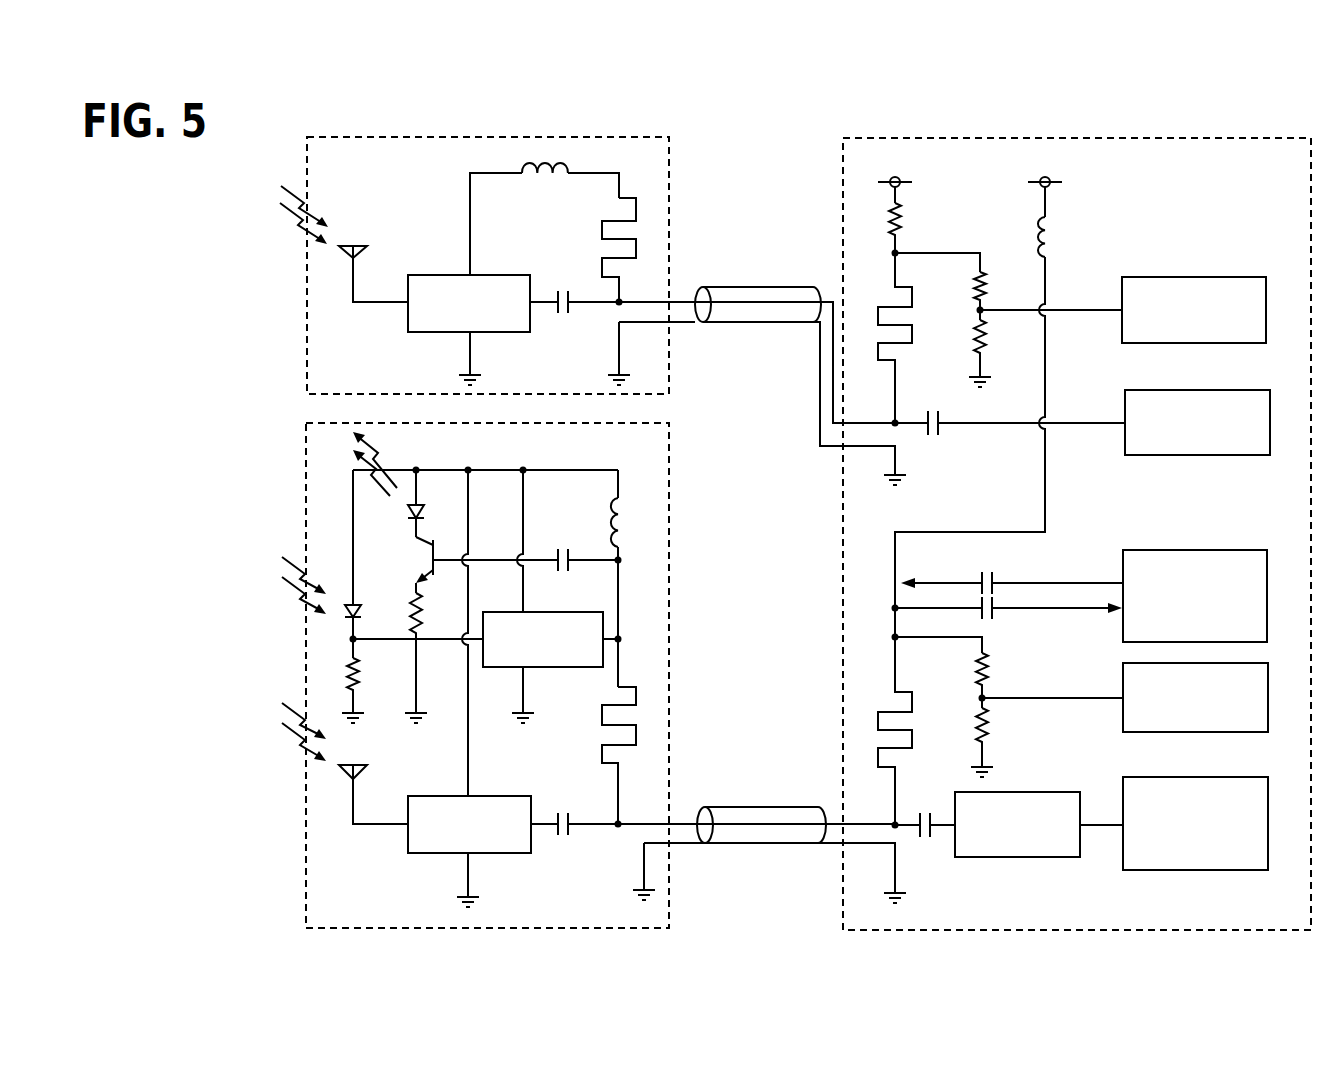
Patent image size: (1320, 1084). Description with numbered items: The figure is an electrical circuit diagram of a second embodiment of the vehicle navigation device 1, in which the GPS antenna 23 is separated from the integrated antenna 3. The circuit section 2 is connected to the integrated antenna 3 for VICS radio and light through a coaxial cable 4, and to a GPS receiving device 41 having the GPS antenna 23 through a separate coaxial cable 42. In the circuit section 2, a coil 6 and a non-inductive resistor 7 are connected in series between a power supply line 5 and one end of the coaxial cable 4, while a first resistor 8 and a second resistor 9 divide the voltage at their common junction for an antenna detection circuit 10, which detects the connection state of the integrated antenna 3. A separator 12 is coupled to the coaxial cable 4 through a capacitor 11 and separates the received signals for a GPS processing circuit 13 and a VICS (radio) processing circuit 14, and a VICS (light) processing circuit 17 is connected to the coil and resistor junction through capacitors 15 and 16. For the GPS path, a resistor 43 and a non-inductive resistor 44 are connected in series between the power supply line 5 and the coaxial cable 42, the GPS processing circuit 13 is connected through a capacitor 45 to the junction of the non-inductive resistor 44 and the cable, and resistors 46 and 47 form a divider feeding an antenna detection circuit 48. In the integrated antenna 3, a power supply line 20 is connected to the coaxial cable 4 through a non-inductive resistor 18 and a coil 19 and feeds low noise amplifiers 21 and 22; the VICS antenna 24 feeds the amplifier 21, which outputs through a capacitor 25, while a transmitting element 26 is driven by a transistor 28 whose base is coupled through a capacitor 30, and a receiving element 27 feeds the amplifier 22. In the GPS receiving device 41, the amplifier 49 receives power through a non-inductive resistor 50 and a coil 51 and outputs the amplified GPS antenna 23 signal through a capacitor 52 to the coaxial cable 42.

The vehicle navigation device 1 is at (899, 135).
The circuit section 2 is at (1026, 138).
The integrated antenna 3 is at (306, 486).
The coaxial cable 4 is at (768, 806).
The power supply line 5 is at (900, 180).
The coil 6 is at (1053, 233).
The non-inductive resistor 7 is at (878, 713).
The first resistor 8 is at (990, 668).
The second resistor 9 is at (990, 722).
The antenna detection circuit 10 is at (1225, 664).
The capacitor 11 is at (925, 812).
The separator 12 is at (1014, 857).
The GPS processing circuit 13 is at (1225, 390).
The VICS (radio) processing circuit 14 is at (1225, 778).
The capacitor 15 is at (988, 572).
The capacitor 16 is at (990, 620).
The VICS (light) processing circuit 17 is at (1225, 552).
The non-inductive resistor 18 is at (638, 733).
The coil 19 is at (628, 522).
The power supply line 20 is at (568, 470).
The amplifier 21 is at (500, 855).
The amplifier 22 is at (566, 668).
The GPS antenna 23 is at (353, 277).
The VICS antenna 24 is at (353, 805).
The capacitor 25 is at (563, 810).
The transmitting element 26 is at (406, 516).
The receiving element 27 is at (340, 612).
The driving transistor 28 is at (416, 565).
The capacitor 30 is at (563, 550).
The GPS receiving device 41 is at (412, 137).
The coaxial cable 42 is at (748, 287).
The resistor 43 is at (900, 216).
The non-inductive resistor 44 is at (878, 315).
The capacitor 45 is at (933, 410).
The resistor 46 is at (988, 282).
The resistor 47 is at (986, 340).
The antenna detection circuit 48 is at (1225, 278).
The amplifier 49 is at (441, 275).
The non-inductive resistor 50 is at (643, 246).
The coil 51 is at (549, 170).
The capacitor 52 is at (563, 290).